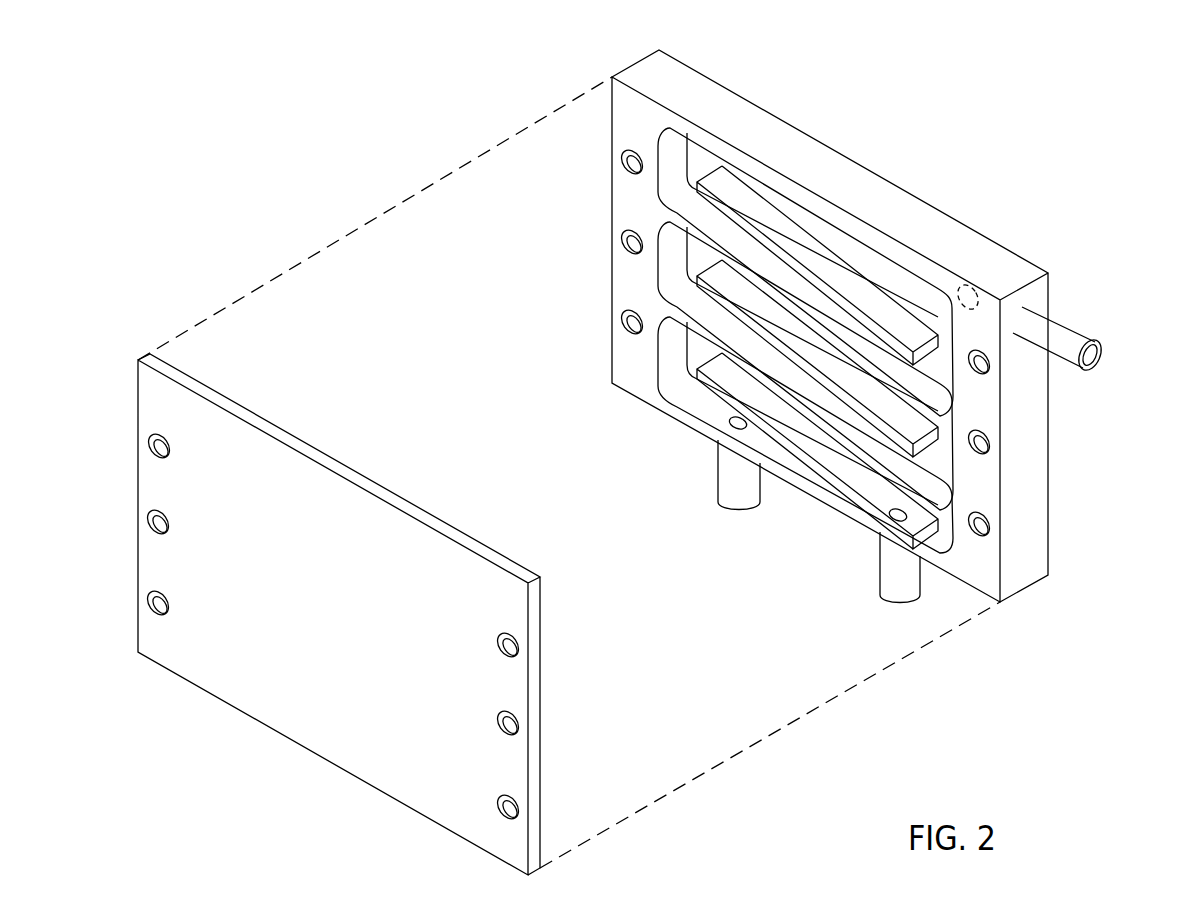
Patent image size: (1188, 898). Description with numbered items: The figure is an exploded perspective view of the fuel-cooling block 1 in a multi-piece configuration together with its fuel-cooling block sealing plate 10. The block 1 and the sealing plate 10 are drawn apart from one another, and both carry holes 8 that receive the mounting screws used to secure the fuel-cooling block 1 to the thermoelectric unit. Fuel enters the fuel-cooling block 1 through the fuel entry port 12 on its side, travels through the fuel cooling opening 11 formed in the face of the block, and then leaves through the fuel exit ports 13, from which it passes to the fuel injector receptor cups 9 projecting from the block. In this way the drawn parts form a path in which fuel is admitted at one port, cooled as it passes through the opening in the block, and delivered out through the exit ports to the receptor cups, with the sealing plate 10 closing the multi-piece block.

The fuel-cooling block 1 is at (872, 152).
The holes 8 is at (150, 448).
The fuel injector receptor cups 9 is at (718, 488).
The fuel-cooling block sealing plate 10 is at (262, 752).
The fuel cooling opening 11 is at (705, 162).
The fuel entry port 12 is at (1100, 357).
The fuel exit ports 13 is at (738, 417).